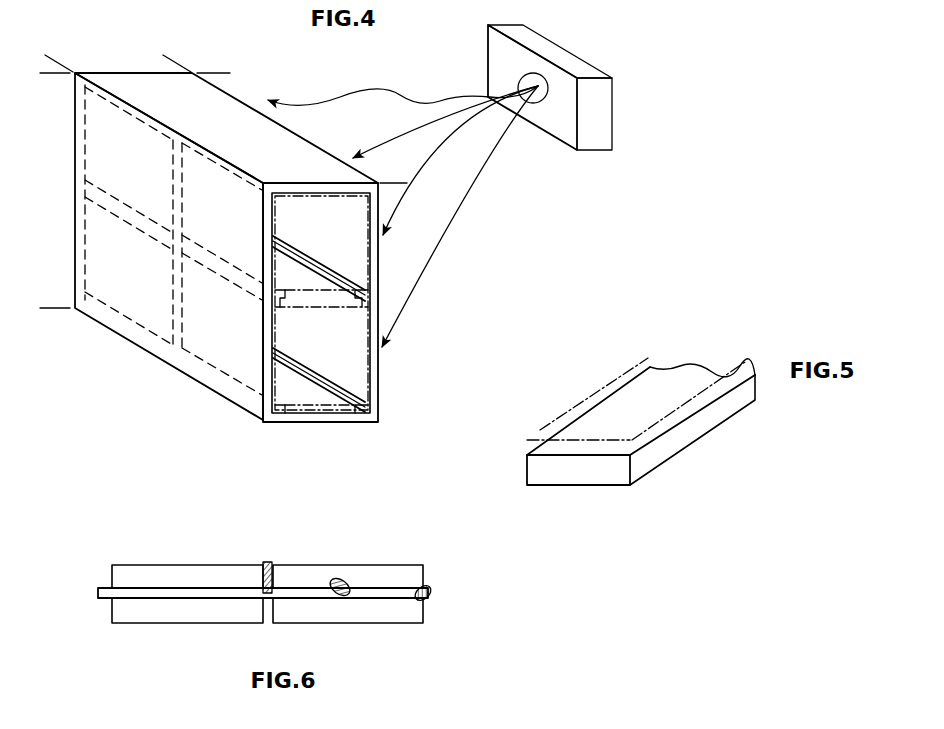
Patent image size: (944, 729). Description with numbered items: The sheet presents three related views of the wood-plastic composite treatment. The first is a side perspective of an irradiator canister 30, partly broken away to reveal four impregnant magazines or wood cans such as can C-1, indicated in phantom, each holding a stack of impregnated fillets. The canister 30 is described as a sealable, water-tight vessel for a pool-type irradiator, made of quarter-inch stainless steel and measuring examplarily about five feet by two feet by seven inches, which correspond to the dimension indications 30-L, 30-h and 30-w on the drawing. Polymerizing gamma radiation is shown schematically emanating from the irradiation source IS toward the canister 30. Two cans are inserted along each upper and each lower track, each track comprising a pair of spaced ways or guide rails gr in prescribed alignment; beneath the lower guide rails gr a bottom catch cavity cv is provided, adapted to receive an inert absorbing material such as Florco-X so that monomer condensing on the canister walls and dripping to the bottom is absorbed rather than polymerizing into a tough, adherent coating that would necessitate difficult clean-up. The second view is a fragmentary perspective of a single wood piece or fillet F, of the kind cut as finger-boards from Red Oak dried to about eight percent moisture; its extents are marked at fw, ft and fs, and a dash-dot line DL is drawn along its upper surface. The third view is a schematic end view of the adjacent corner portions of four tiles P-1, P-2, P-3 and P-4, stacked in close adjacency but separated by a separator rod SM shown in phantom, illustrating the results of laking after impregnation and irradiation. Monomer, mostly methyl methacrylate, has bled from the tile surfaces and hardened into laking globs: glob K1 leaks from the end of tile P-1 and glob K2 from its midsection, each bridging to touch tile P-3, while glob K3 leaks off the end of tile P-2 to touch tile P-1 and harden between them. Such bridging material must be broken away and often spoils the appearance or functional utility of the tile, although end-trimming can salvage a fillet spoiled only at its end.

In FIG. 4, the irradiator canister 30 is at (183, 378).
In FIG. 4, the wood can C-1 is at (112, 167).
In FIG. 4, the bottom cavity cv is at (327, 410).
In FIG. 4, the lower guide rails gr is at (363, 403).
In FIG. 4, the gamma irradiation source IS is at (622, 130).
In FIG. 4, the container width 30-w is at (56, 60).
In FIG. 4, the container height 30-h is at (53, 75).
In FIG. 4, the container length 30-L is at (213, 75).
In FIG. 5, the fillet F is at (717, 442).
In FIG. 5, the dash-dot outline DL is at (735, 373).
In FIG. 5, the film width fw is at (584, 474).
In FIG. 5, the film thickness ft is at (634, 470).
In FIG. 5, the film side fs is at (677, 455).
In FIG. 6, the separator rod SM is at (104, 588).
In FIG. 6, the tile P-1 is at (372, 565).
In FIG. 6, the tile P-2 is at (178, 565).
In FIG. 6, the tile P-3 is at (320, 624).
In FIG. 6, the tile P-4 is at (172, 624).
In FIG. 6, the laking glob K1 is at (428, 588).
In FIG. 6, the laking glob K2 is at (336, 580).
In FIG. 6, the laking glob K3 is at (270, 562).